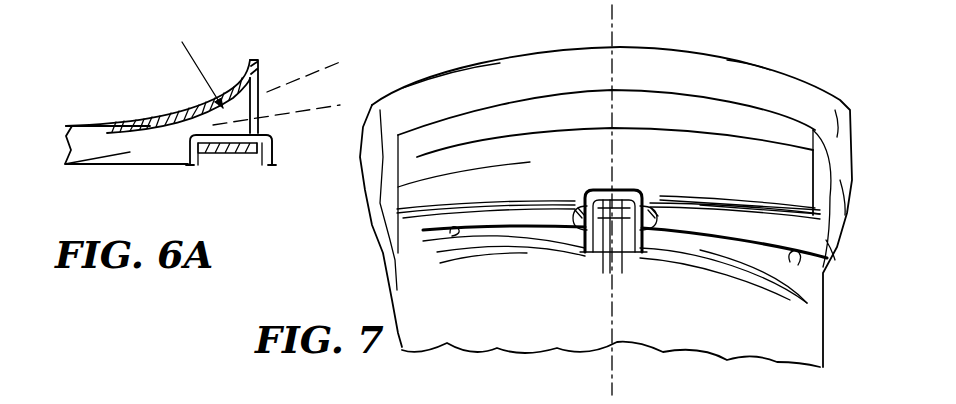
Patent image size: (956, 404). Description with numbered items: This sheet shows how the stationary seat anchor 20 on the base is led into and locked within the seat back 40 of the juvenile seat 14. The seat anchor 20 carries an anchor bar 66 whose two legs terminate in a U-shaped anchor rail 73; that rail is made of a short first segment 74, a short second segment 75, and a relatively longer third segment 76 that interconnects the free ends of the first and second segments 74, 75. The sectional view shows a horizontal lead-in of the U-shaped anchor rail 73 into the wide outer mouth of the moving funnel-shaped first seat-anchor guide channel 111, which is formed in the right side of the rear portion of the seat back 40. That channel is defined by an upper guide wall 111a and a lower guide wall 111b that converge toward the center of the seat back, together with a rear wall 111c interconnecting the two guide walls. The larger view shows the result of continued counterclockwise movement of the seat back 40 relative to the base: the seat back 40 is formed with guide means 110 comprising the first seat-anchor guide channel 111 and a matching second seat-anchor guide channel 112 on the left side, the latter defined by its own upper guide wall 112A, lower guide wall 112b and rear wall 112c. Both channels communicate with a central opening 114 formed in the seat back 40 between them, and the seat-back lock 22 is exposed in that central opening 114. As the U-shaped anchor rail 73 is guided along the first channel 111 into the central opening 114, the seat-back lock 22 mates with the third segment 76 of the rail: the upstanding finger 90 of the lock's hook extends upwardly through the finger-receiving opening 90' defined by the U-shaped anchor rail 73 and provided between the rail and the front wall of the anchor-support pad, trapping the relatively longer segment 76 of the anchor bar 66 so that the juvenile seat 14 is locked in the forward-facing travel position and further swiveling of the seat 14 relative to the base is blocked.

In FIG. 6A, the juvenile seat 14 is at (240, 70).
In FIG. 7, the juvenile seat 14 is at (711, 50).
In FIG. 6A, the seat back 40 is at (263, 64).
In FIG. 7, the seat back 40 is at (708, 192).
In FIG. 6A, the stationary seat anchor 20 is at (128, 152).
In FIG. 7, the stationary seat anchor 20 is at (537, 237).
In FIG. 7, the seat-back lock 22 is at (646, 184).
In FIG. 6A, the anchor bar 66 is at (283, 153).
In FIG. 7, the anchor bar 66 is at (577, 201).
In FIG. 6A, the U-shaped anchor rail 73 is at (222, 150).
In FIG. 6A, the first segment 74 is at (272, 162).
In FIG. 6A, the second segment 75 is at (190, 150).
In FIG. 6A, the third segment 76 is at (236, 158).
In FIG. 7, the upstanding finger 90 is at (621, 194).
In FIG. 6A, the finger-receiving opening 90' is at (254, 138).
In FIG. 7, the finger-receiving opening 90' is at (599, 254).
In FIG. 7, the guide means 110 is at (537, 192).
In FIG. 6A, the first seat-anchor guide channel 111 is at (82, 52).
In FIG. 7, the first seat-anchor guide channel 111 is at (733, 223).
In FIG. 7, the upper guide wall 111a is at (686, 196).
In FIG. 6A, the lower guide wall 111b is at (140, 140).
In FIG. 7, the lower guide wall 111b is at (798, 258).
In FIG. 6A, the rear wall 111c is at (122, 133).
In FIG. 7, the rear wall 111c is at (776, 165).
In FIG. 7, the second seat-anchor guide channel 112 is at (478, 222).
In FIG. 7, the upper guide wall 112A is at (412, 205).
In FIG. 7, the lower guide wall 112b is at (457, 232).
In FIG. 7, the rear wall 112c is at (400, 237).
In FIG. 7, the central opening 114 is at (595, 187).